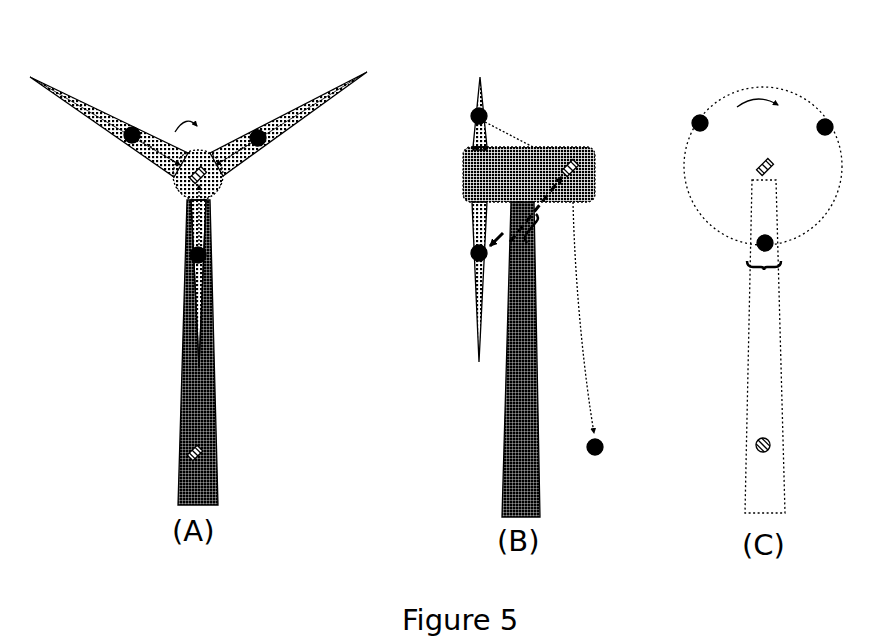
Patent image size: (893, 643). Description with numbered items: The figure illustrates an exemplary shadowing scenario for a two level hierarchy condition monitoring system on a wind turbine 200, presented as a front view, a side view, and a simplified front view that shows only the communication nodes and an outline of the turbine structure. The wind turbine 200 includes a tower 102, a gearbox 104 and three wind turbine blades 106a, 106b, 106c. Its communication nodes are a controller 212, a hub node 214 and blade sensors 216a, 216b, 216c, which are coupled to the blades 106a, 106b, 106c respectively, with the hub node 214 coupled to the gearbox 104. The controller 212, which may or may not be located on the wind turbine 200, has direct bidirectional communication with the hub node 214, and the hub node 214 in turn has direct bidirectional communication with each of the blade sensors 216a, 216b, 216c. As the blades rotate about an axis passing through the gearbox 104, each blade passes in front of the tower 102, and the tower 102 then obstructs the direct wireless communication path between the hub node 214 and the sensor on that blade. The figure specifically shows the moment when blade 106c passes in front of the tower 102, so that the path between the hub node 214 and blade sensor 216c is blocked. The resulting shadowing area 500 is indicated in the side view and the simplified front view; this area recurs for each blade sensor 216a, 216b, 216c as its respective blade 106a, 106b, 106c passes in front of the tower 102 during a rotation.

The wind turbine 200 is at (163, 68).
The tower 102 is at (212, 415).
The gearbox 104 is at (222, 183).
The wind turbine blade 106a is at (88, 108).
The wind turbine blade 106b is at (292, 113).
The wind turbine blade 106c is at (200, 307).
The controller 212 is at (188, 450).
The hub node 214 is at (192, 177).
The blade sensor 216a is at (127, 142).
The blade sensor 216b is at (267, 140).
The blade sensor 216c is at (205, 252).
The shadowing area 500 is at (542, 235).